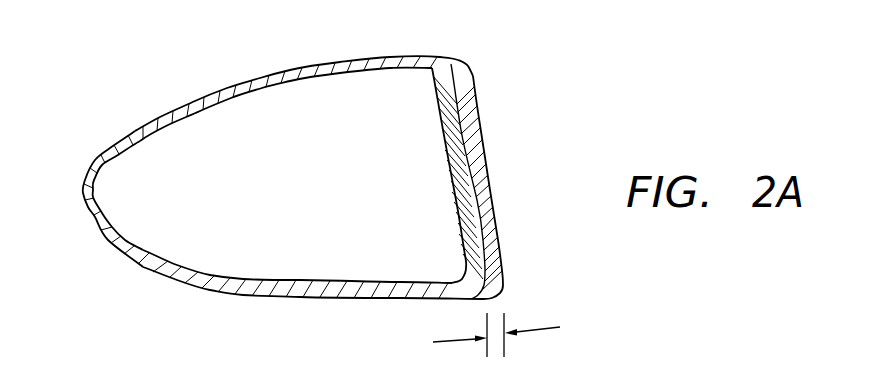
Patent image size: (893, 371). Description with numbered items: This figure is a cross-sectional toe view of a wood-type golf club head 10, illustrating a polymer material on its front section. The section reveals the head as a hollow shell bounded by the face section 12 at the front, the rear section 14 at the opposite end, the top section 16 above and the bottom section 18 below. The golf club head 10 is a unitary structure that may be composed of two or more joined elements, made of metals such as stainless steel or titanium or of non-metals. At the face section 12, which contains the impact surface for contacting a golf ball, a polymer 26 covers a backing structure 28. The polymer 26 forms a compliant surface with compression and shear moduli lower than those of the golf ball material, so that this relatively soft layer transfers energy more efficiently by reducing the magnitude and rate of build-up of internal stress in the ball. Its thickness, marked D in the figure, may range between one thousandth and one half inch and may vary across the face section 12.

The wood-type golf club head 10 is at (110, 80).
The face section 12 is at (480, 118).
The rear section 14 is at (130, 258).
The top section 16 is at (268, 72).
The bottom section 18 is at (318, 299).
The polymer 26 is at (494, 208).
The backing structure 28 is at (455, 174).